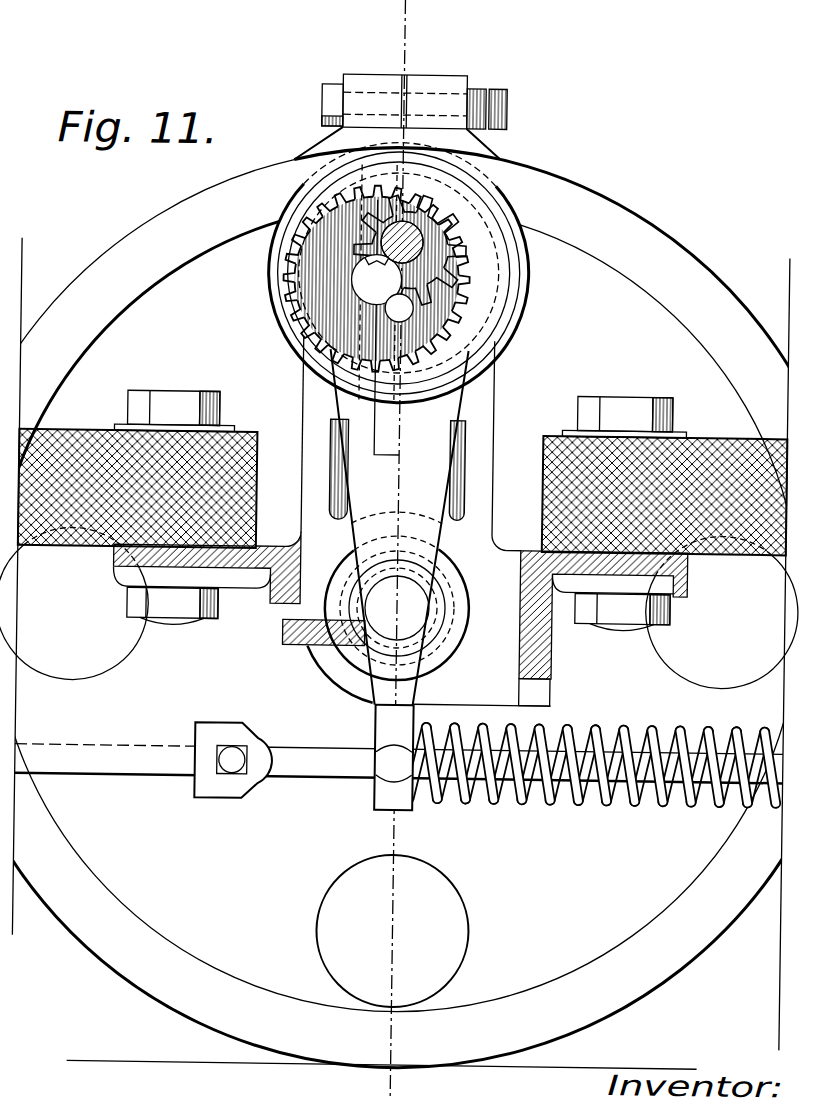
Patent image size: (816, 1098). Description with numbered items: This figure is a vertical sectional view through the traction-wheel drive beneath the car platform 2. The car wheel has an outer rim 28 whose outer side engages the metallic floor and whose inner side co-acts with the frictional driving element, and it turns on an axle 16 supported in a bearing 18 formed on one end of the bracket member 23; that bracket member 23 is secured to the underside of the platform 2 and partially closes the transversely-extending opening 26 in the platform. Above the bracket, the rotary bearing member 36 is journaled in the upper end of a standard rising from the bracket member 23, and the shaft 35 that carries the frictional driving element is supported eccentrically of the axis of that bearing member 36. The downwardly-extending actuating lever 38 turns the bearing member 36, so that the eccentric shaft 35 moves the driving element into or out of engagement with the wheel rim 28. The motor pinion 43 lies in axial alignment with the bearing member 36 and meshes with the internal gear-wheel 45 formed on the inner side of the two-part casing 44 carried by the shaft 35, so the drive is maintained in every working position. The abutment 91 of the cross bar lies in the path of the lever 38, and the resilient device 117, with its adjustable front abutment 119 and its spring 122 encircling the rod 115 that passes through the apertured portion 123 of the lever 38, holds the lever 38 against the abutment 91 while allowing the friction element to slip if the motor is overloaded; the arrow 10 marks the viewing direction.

The direction of view 10 is at (462, 22).
The platform 2 is at (83, 432).
The axle 16 is at (410, 634).
The bearing 18 is at (337, 670).
The bracket member 23 is at (552, 524).
The transversely-extending opening 26 is at (268, 457).
The outer rim 28 is at (677, 259).
The shaft 35 is at (388, 330).
The rotary bearing member 36 is at (473, 179).
The actuating lever 38 is at (460, 405).
The pinion 43 is at (437, 219).
The two-part casing 44 is at (297, 199).
The internal gear-wheel 45 is at (437, 273).
The abutment 91 is at (283, 640).
The rod 115 is at (156, 779).
The resilient device 117 is at (592, 771).
The front abutment 119 is at (228, 790).
The spring 122 is at (557, 801).
The apertured portion 123 is at (380, 796).